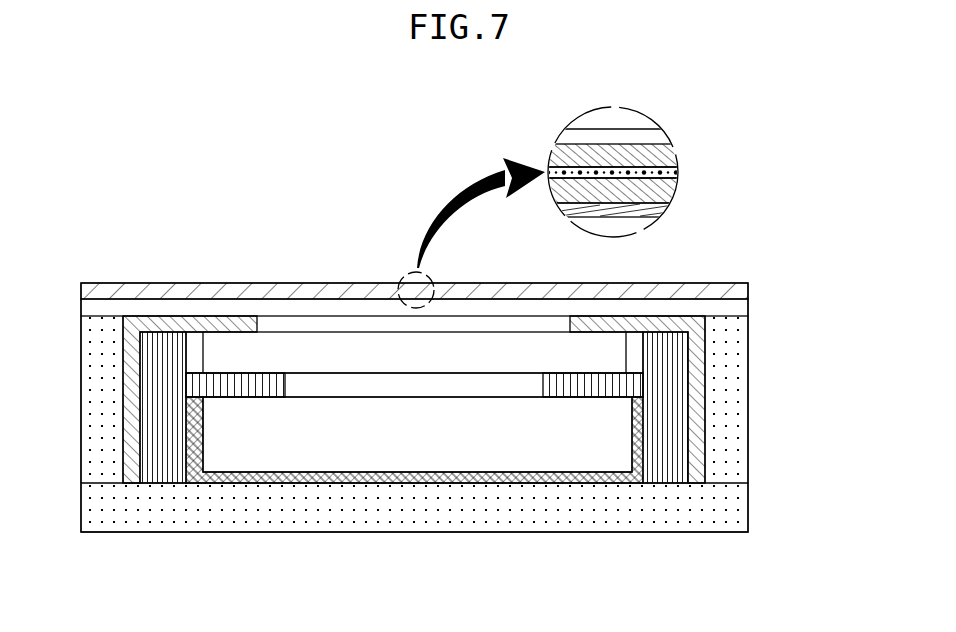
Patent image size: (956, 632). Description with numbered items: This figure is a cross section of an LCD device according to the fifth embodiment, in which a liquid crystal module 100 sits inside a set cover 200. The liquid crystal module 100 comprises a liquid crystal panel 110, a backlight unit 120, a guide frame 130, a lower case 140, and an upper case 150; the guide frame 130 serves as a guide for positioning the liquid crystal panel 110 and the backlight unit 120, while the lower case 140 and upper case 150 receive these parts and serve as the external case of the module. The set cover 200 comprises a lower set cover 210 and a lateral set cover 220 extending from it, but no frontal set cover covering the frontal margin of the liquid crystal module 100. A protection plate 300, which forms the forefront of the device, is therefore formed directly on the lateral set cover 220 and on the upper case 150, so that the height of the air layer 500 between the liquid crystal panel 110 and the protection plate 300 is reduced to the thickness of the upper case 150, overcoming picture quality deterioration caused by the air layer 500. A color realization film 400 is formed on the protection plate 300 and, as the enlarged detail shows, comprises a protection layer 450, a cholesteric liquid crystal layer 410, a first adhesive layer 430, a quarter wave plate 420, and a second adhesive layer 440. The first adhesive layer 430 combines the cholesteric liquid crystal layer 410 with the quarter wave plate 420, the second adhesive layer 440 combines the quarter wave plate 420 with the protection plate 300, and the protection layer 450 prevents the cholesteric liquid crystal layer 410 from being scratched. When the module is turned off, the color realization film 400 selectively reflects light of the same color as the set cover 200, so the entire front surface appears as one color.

The liquid crystal module 100 is at (407, 469).
The liquid crystal panel 110 is at (238, 362).
The backlight unit 120 is at (417, 490).
The guide frame 130 is at (173, 477).
The lower case 140 is at (320, 477).
The upper case 150 is at (132, 477).
The set cover 200 is at (478, 407).
The lower set cover 210 is at (680, 513).
The lateral set cover 220 is at (740, 453).
The protection plate 300 is at (740, 309).
The color realization film 400 is at (740, 290).
The cholesteric liquid crystal layer 410 is at (672, 155).
The quarter wave plate 420 is at (674, 189).
The first adhesive layer 430 is at (678, 172).
The second adhesive layer 440 is at (660, 207).
The protection layer 450 is at (668, 140).
The air layer 500 is at (280, 325).